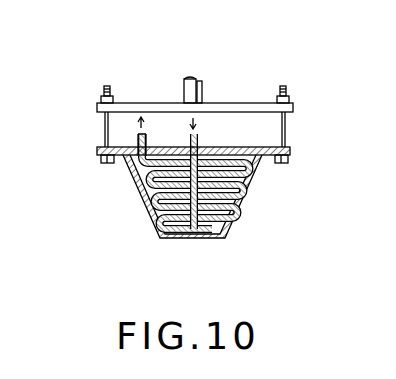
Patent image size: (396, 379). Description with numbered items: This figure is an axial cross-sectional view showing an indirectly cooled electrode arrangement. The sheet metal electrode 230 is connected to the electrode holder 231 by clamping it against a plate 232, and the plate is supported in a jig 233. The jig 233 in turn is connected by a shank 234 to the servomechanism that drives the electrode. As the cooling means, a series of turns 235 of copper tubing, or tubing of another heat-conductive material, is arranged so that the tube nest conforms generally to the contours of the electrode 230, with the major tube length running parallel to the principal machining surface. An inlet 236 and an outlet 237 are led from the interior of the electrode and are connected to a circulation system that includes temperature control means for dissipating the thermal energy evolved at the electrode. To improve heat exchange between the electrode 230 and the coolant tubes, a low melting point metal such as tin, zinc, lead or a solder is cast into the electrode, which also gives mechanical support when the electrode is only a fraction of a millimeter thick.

The sheet metal electrode 230 is at (221, 238).
The electrode holder 231 is at (298, 97).
The plate 232 is at (290, 149).
The jig 233 is at (98, 105).
The shank 234 is at (192, 78).
The turns of copper tubing 235 is at (247, 189).
The inlet 236 is at (200, 141).
The outlet 237 is at (137, 140).